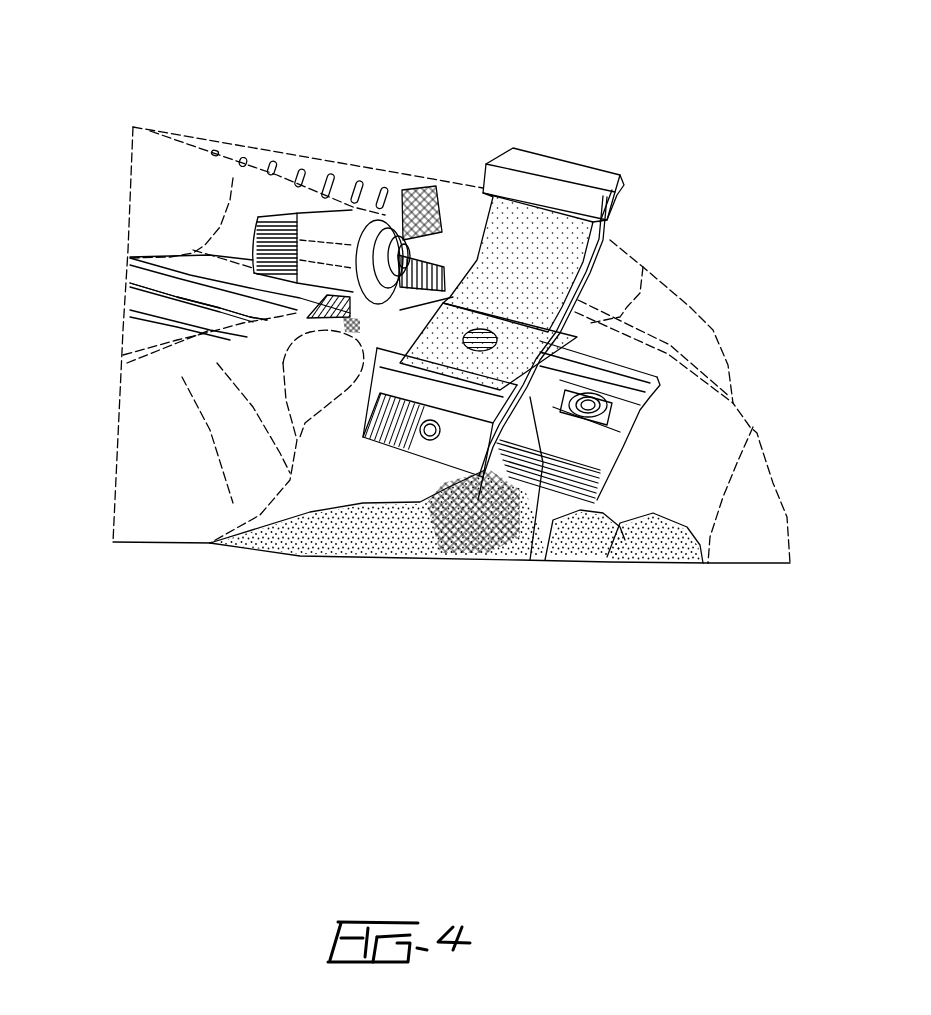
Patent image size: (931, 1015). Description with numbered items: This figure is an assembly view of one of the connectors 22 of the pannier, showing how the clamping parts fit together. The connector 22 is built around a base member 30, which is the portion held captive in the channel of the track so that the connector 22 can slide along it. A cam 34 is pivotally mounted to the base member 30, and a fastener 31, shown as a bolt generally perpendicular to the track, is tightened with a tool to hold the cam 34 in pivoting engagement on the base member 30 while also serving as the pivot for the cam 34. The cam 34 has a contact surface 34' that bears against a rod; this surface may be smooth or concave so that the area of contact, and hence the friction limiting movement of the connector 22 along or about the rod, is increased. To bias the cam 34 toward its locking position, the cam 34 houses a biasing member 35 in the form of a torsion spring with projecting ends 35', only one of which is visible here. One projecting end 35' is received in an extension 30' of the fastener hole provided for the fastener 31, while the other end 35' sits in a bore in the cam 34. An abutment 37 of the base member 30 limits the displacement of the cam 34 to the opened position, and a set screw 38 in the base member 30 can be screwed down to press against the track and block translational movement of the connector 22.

The connector 22 is at (626, 153).
The base member 30 is at (510, 235).
The extension of the fastener hole 30' is at (542, 408).
The fastener 31 is at (407, 237).
The cam 34 is at (307, 192).
The contact surface 34' is at (345, 503).
The biasing member 35 is at (400, 208).
The projecting end 35' is at (152, 300).
The abutment 37 is at (431, 382).
The set screw 38 is at (445, 445).